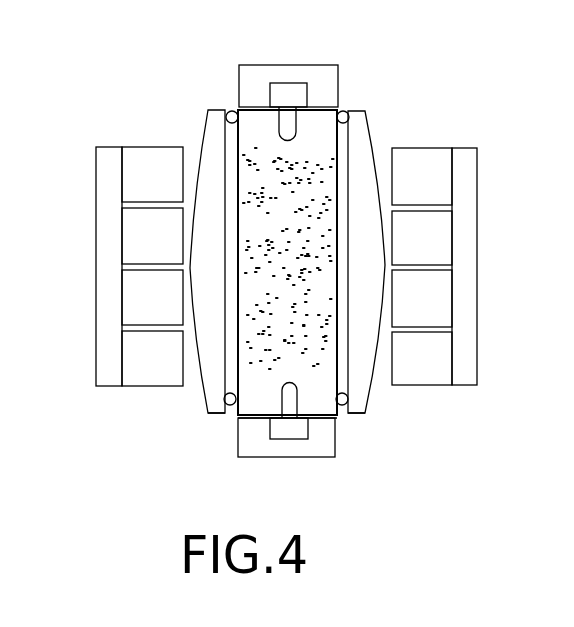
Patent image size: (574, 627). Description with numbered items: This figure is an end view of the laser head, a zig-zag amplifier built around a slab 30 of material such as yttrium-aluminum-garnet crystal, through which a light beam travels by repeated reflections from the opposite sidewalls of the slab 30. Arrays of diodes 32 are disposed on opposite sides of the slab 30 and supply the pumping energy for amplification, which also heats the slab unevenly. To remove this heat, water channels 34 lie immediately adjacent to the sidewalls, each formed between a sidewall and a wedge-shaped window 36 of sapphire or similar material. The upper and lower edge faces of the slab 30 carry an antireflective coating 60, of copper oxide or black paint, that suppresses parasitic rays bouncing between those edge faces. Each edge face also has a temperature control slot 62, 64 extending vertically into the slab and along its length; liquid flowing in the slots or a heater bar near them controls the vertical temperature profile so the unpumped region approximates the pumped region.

The slab 30 is at (326, 185).
The arrays of diodes 32 is at (96, 272).
The water channels 34 is at (343, 142).
The wedge-shaped windows 36 is at (206, 405).
The antireflective coating 60 is at (337, 93).
The temperature control slot 62 is at (291, 128).
The temperature control slot 64 is at (290, 400).